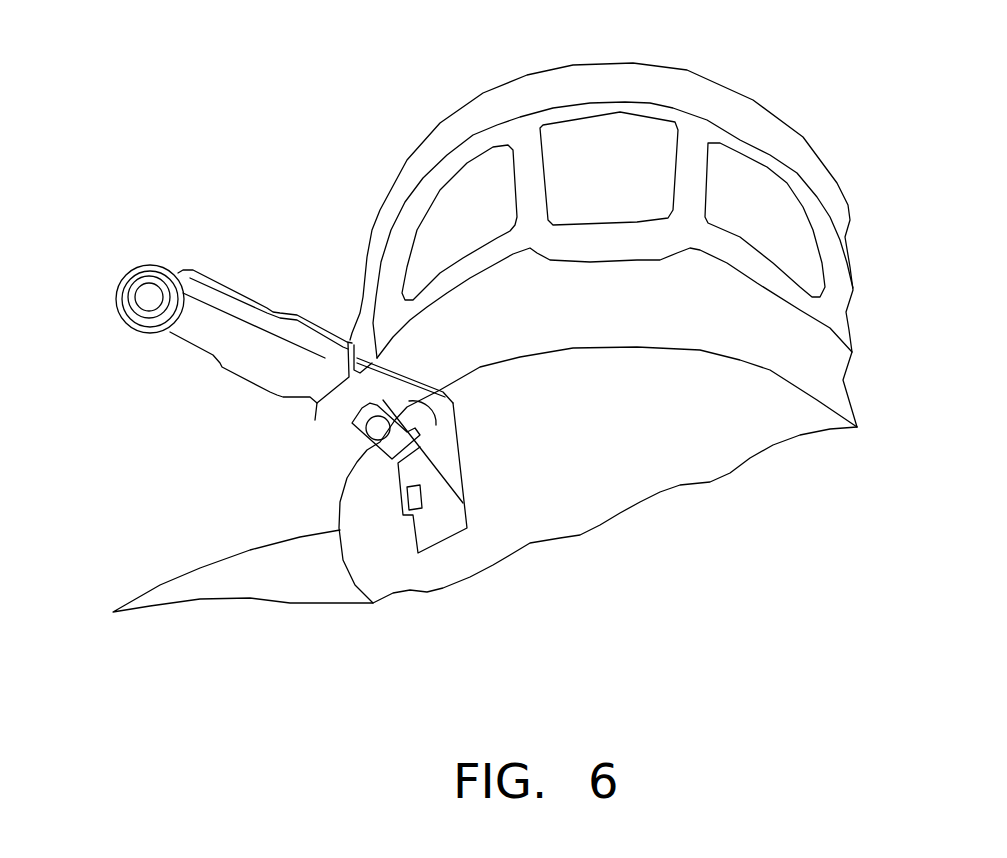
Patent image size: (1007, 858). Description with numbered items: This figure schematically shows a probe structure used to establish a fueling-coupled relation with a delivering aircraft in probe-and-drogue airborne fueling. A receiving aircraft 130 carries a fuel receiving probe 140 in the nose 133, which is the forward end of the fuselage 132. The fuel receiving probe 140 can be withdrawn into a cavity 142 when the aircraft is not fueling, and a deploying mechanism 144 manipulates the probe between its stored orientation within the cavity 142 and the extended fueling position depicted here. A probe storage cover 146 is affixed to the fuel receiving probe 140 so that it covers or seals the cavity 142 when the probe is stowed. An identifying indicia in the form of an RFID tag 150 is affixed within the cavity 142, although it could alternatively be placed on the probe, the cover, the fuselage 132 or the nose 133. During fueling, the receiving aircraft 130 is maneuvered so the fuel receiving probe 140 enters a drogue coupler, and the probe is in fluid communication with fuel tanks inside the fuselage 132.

The receiving aircraft 130 is at (362, 60).
The fuselage 132 is at (313, 497).
The nose 133 is at (622, 447).
The fuel receiving probe 140 is at (149, 265).
The cavity 142 is at (455, 517).
The deploying mechanism 144 is at (350, 423).
The probe storage cover 146 is at (233, 285).
The RFID tag 150 is at (410, 498).